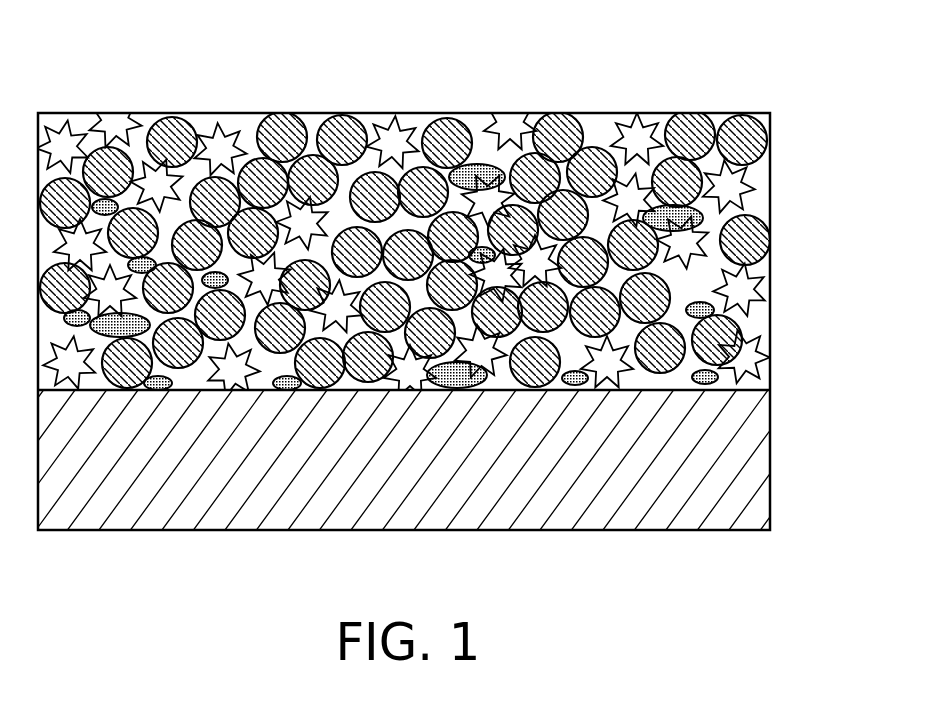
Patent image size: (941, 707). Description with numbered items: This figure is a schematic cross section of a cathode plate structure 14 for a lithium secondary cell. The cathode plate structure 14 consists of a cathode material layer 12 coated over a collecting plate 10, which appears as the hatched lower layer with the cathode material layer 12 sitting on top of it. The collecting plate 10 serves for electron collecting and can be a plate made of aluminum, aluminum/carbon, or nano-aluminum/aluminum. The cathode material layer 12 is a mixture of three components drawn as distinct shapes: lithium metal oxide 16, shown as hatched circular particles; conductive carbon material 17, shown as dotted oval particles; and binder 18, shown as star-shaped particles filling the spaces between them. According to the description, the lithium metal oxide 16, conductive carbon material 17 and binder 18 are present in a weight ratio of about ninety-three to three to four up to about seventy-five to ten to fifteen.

The collecting plate 10 is at (747, 462).
The cathode material layer 12 is at (442, 211).
The cathode plate structure 14 is at (871, 107).
The lithium metal oxide 16 is at (347, 135).
The conductive carbon material 17 is at (481, 164).
The binder 18 is at (229, 130).